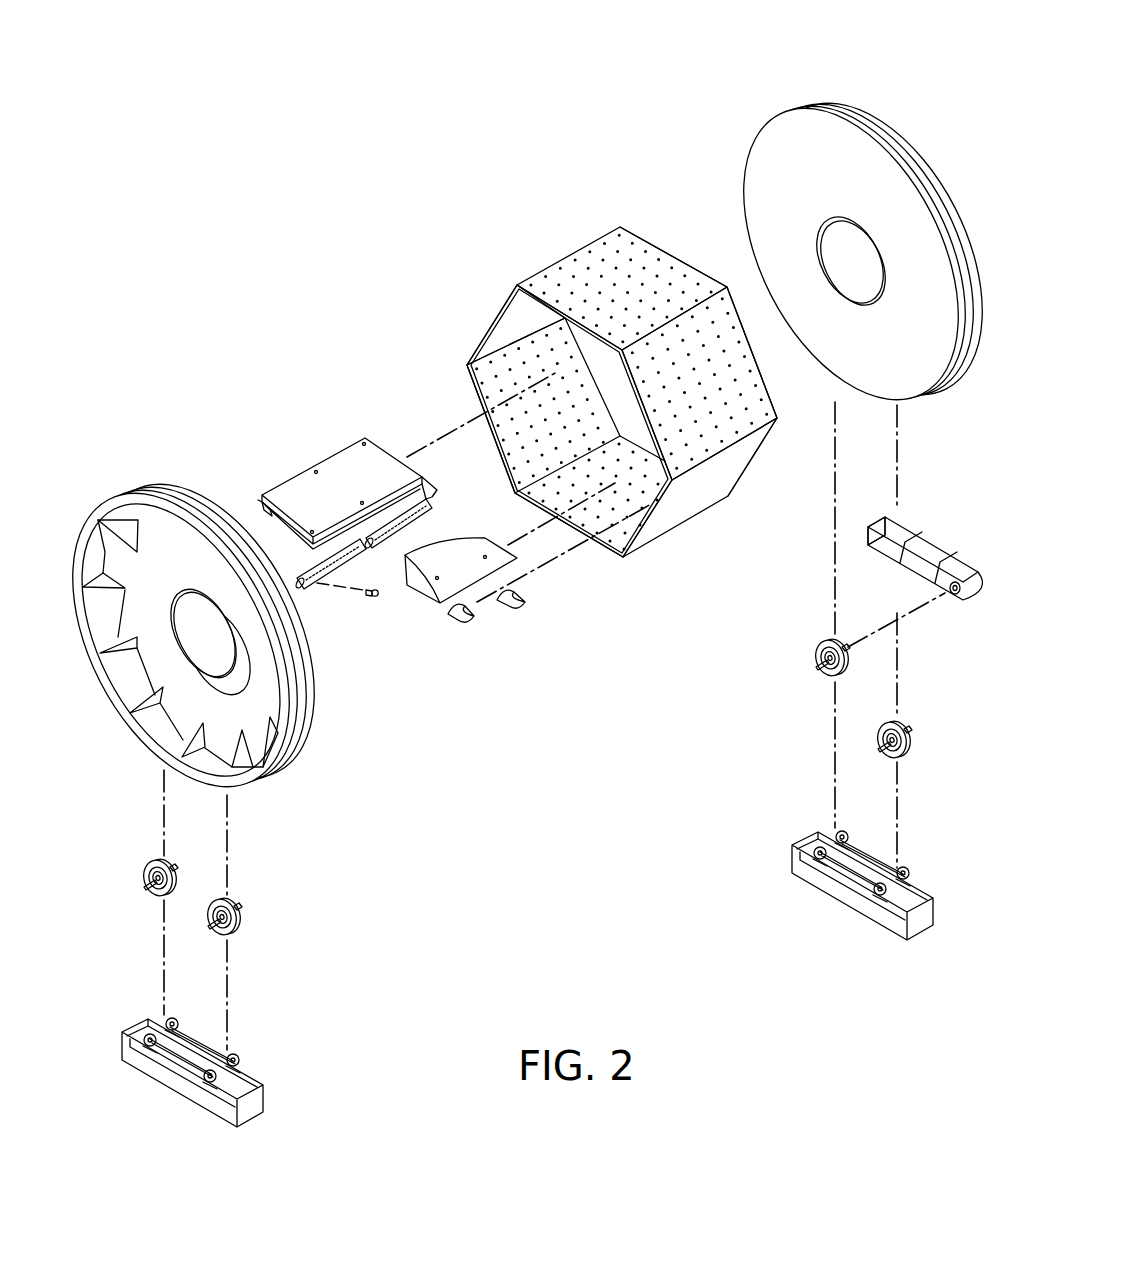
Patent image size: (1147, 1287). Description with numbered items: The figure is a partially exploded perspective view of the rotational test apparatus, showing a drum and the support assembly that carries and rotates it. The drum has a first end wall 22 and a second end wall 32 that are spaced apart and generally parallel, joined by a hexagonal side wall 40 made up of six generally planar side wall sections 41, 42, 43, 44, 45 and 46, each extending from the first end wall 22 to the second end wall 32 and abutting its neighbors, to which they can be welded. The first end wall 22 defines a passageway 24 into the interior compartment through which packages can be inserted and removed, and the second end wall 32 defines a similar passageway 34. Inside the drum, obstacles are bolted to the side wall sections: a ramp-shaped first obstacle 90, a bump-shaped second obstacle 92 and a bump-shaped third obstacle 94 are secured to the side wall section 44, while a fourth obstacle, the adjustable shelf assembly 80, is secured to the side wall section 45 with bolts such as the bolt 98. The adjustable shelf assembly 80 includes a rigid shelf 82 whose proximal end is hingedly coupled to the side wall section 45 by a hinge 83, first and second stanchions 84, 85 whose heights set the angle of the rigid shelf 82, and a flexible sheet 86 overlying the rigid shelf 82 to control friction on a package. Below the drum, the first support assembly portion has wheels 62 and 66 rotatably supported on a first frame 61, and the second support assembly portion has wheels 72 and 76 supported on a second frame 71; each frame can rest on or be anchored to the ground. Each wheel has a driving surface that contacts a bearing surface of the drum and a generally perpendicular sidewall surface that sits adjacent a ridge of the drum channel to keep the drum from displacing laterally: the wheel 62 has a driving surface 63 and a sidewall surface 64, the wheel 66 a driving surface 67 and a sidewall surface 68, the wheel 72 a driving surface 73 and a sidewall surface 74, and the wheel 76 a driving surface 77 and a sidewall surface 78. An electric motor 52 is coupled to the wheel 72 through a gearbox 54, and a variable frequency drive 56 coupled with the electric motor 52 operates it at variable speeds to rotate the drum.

The first end wall 22 is at (194, 614).
The passageway 24 is at (258, 677).
The second end wall 32 is at (863, 227).
The passageway 34 is at (857, 232).
The side wall 40 is at (630, 386).
The side wall section 41 is at (668, 262).
The side wall section 42 is at (760, 367).
The side wall section 43 is at (741, 474).
The side wall section 44 is at (617, 556).
The side wall section 45 is at (470, 372).
The side wall section 46 is at (490, 333).
The electric motor 52 is at (918, 561).
The gearbox 54 is at (958, 598).
The variable frequency drive 56 is at (877, 522).
The first frame 61 is at (183, 1100).
The wheel 62 is at (124, 868).
The driving surface 63 is at (158, 860).
The sidewall surface 64 is at (136, 876).
The wheel 66 is at (248, 946).
The driving surface 67 is at (242, 920).
The sidewall surface 68 is at (215, 934).
The second frame 71 is at (850, 910).
The wheel 72 is at (796, 648).
The driving surface 73 is at (830, 640).
The sidewall surface 74 is at (806, 657).
The wheel 76 is at (916, 772).
The driving surface 77 is at (910, 745).
The sidewall surface 78 is at (882, 760).
The adjustable shelf assembly 80 is at (329, 478).
The rigid shelf 82 is at (427, 482).
The hinge 83 is at (262, 507).
The first stanchion 84 is at (293, 557).
The second stanchion 85 is at (400, 535).
The flexible sheet 86 is at (306, 477).
The first obstacle 90 is at (424, 596).
The second obstacle 92 is at (462, 620).
The third obstacle 94 is at (507, 609).
The bolt 98 is at (368, 597).